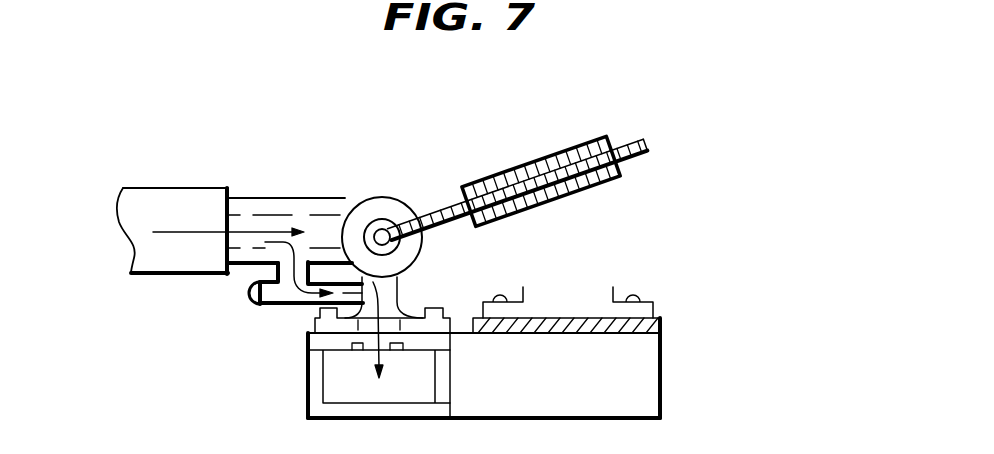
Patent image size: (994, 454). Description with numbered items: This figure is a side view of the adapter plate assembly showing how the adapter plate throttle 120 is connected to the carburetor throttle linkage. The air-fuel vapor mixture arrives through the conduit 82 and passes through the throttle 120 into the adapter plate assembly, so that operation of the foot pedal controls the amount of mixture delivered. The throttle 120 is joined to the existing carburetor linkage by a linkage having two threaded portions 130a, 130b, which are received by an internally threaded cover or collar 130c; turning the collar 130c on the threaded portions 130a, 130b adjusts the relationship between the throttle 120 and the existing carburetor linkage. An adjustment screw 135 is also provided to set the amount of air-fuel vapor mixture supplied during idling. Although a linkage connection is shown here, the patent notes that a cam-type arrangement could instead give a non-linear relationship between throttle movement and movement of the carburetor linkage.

The conduit 82 is at (188, 188).
The throttle 120 is at (403, 188).
The threaded portion 130a is at (453, 198).
The threaded portion 130b is at (642, 151).
The internally threaded cover or collar 130c is at (525, 210).
The adjustment screw 135 is at (252, 320).